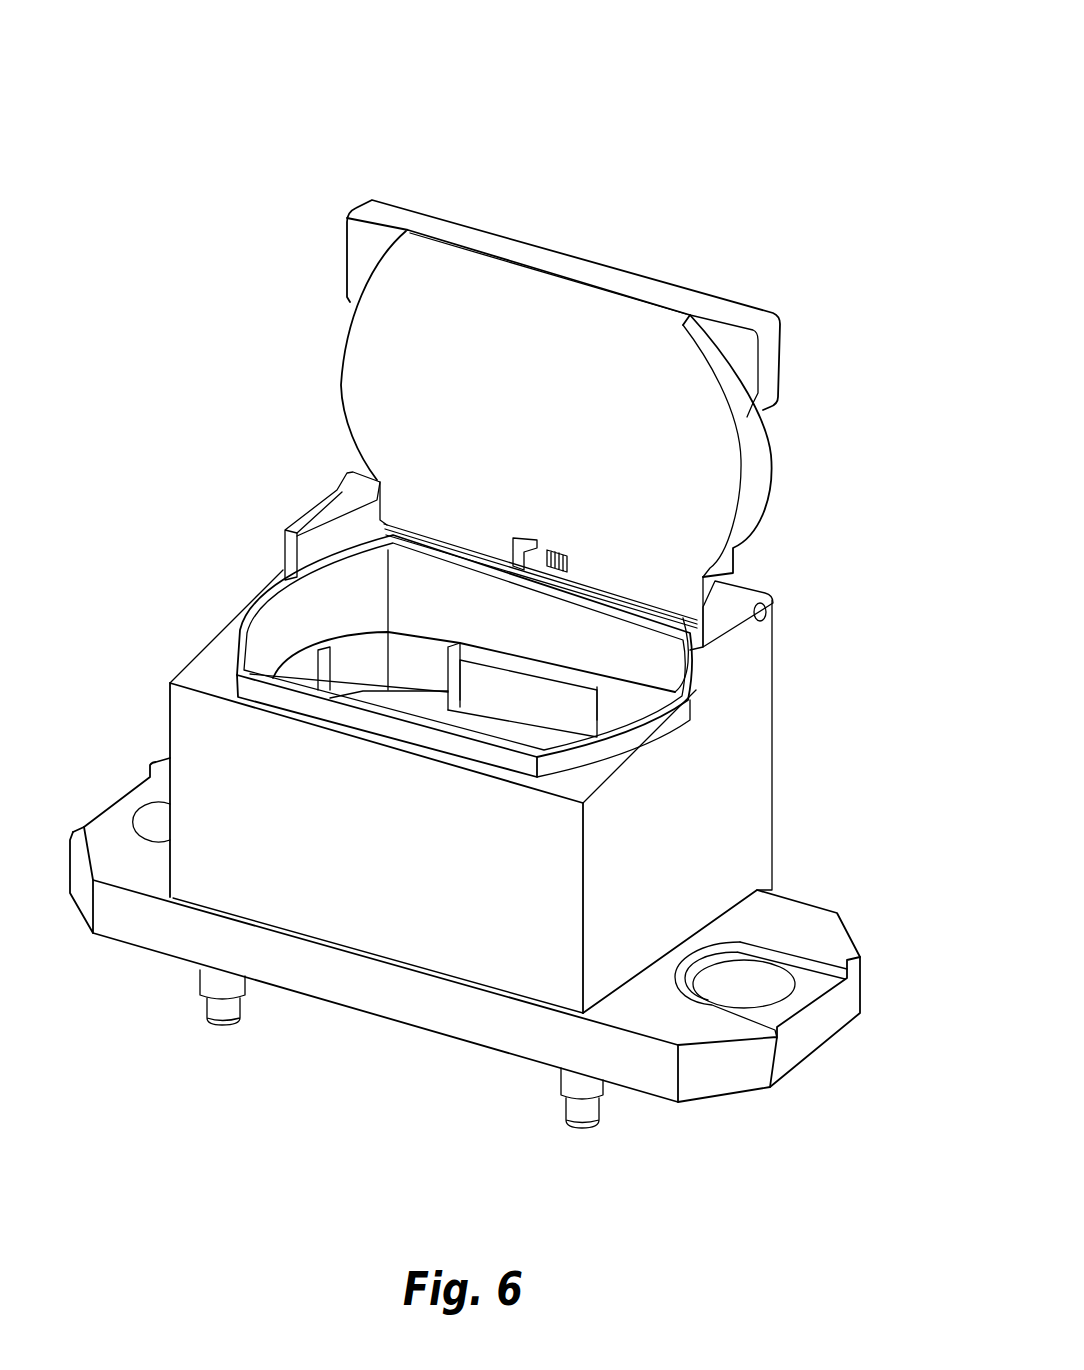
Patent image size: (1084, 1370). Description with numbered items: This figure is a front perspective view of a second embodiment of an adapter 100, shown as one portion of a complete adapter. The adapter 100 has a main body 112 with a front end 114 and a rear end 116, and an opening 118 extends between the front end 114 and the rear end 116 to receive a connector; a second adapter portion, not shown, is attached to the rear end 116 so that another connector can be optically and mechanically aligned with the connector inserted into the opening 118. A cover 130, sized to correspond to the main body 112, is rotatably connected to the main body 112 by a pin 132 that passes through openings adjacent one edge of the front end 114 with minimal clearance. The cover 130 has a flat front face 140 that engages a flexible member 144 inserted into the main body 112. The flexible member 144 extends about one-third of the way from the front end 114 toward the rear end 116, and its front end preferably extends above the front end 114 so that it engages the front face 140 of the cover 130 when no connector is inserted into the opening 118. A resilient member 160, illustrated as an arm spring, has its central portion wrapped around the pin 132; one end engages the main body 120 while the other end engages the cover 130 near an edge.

The adapter 100 is at (718, 145).
The main body 112 is at (773, 812).
The front end 114 is at (229, 596).
The rear end 116 is at (797, 1067).
The opening 118 is at (527, 733).
The main body 120 is at (596, 772).
The cover 130 is at (773, 450).
The pin 132 is at (527, 560).
The front face 140 is at (462, 285).
The flexible member 144 is at (456, 746).
The resilient member 160 is at (556, 573).